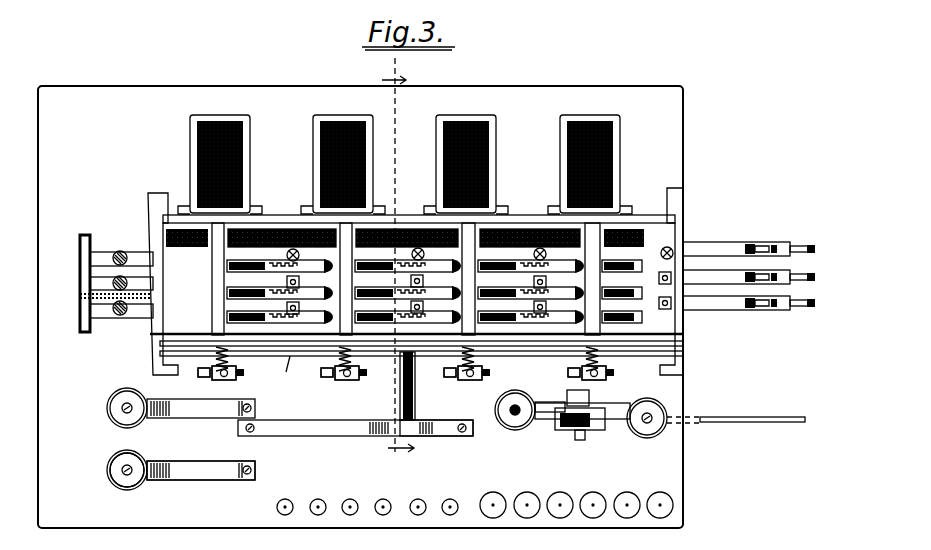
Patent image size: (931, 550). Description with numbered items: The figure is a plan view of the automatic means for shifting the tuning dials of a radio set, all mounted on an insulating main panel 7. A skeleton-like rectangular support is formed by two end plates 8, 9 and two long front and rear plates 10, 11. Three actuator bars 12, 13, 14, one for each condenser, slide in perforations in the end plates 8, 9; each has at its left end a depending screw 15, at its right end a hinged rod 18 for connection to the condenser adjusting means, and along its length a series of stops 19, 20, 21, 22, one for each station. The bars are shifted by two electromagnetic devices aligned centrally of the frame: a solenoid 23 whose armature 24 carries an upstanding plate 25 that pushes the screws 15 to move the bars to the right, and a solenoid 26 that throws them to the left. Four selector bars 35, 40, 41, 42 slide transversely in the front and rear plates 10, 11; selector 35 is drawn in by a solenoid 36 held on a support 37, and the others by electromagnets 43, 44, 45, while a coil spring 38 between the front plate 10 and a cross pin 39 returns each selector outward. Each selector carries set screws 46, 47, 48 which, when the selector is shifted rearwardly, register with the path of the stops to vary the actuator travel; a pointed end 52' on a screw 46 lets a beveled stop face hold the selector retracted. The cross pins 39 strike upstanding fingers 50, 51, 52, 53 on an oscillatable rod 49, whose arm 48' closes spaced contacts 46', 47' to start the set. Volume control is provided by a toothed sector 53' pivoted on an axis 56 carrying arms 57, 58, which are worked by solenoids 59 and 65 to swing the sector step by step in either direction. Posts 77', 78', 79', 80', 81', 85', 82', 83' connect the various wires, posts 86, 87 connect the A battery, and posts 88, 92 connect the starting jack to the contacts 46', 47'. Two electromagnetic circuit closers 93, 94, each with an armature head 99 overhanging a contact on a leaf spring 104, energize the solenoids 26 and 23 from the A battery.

The main panel 7 is at (360, 307).
The end plate 8 is at (137, 208).
The end plate 9 is at (684, 225).
The front plate 10 is at (402, 360).
The rear plate 11 is at (400, 225).
The actuator bar 12 is at (725, 308).
The actuator bar 13 is at (716, 277).
The actuator bar 14 is at (735, 249).
The screw 15 is at (114, 252).
The hinged rod 18 is at (800, 300).
The stop 19 is at (300, 283).
The stop 20 is at (424, 282).
The stop 21 is at (547, 283).
The stop 22 is at (672, 279).
The solenoid 23 is at (270, 240).
The armature 24 is at (84, 276).
The upstanding plate 25 is at (82, 312).
The solenoid 26 is at (520, 240).
The selector bar 35 is at (214, 238).
The solenoid 36 is at (200, 140).
The support 37 is at (250, 136).
The coil spring 38 is at (236, 364).
The cross pin 39 is at (212, 380).
The selector bar 40 is at (343, 238).
The selector bar 41 is at (466, 238).
The selector bar 42 is at (592, 238).
The electromagnet 43 is at (370, 150).
The electromagnet 44 is at (492, 140).
The electromagnet 45 is at (617, 143).
The set screw 46 is at (406, 259).
The set screw 47 is at (412, 286).
The set screw 48 is at (411, 310).
The contact 46' is at (355, 442).
The contact 47' is at (436, 441).
The arm 48' is at (422, 386).
The oscillatable rod 49 is at (289, 373).
The upstanding finger 50 is at (198, 372).
The upstanding finger 51 is at (320, 374).
The upstanding finger 52 is at (436, 377).
The pointed end 52' is at (459, 315).
The upstanding finger 53 is at (556, 367).
The sector 53' is at (564, 436).
The pivotal axis 56 is at (580, 440).
The arm 57 is at (545, 402).
The arm 58 is at (610, 428).
The solenoid 59 is at (515, 430).
The solenoid 65 is at (655, 433).
The post 77' is at (382, 497).
The post 78' is at (349, 497).
The post 79' is at (317, 497).
The post 80' is at (284, 497).
The post 81' is at (417, 497).
The post 82' is at (627, 495).
The post 83' is at (660, 495).
The post 85' is at (451, 497).
The post 86 is at (493, 495).
The post 87 is at (527, 495).
The post 88 is at (560, 495).
The post 92 is at (593, 495).
The electromagnetic circuit closer 93 is at (107, 472).
The electromagnetic circuit closer 94 is at (107, 410).
The head 99 is at (122, 487).
The leaf spring 104 is at (199, 480).